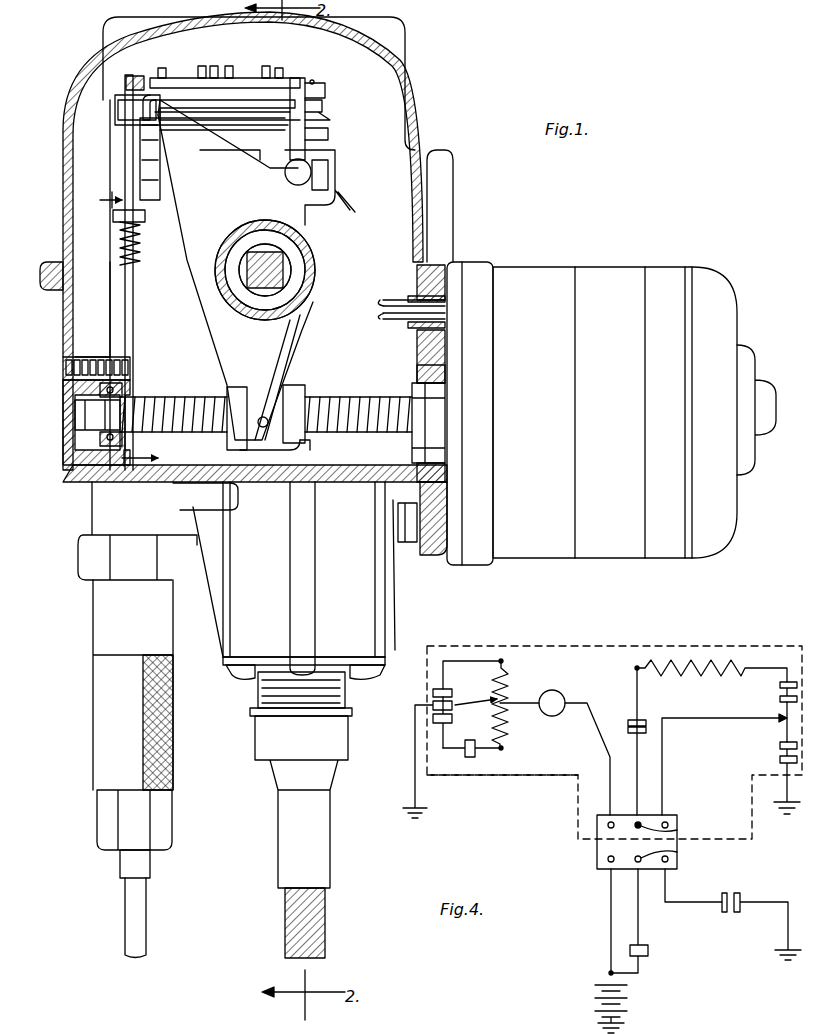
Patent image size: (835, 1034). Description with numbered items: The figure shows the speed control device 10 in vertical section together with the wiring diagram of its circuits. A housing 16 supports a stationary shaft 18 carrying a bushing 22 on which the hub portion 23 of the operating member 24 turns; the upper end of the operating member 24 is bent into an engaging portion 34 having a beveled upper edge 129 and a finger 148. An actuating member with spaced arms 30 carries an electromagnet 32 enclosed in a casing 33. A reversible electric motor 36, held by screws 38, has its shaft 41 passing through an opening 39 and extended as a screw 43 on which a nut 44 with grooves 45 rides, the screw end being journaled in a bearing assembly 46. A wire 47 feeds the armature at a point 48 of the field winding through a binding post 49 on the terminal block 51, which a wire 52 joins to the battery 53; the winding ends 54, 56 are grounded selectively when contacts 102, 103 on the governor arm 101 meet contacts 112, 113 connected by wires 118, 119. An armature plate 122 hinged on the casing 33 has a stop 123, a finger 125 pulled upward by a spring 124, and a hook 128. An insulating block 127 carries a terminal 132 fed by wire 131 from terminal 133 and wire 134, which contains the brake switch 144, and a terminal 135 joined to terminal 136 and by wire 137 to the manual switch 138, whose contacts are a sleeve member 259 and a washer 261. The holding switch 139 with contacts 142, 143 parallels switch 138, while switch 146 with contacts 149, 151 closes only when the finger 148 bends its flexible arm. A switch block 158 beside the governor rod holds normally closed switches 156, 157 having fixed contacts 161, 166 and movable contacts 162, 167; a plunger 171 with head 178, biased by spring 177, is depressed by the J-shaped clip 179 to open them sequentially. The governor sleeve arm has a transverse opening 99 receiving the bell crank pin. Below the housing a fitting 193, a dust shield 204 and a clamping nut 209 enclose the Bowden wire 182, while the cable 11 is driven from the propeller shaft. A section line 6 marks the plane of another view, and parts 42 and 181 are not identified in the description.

In FIG. 1, the speed control device 10 is at (470, 103).
In FIG. 1, the cable 11 is at (333, 925).
In FIG. 1, the housing 16 is at (63, 160).
In FIG. 1, the stationary shaft 18 is at (310, 262).
In FIG. 1, the bushing 22 is at (300, 290).
In FIG. 1, the hub portion 23 is at (260, 240).
In FIG. 1, the operating member 24 is at (175, 258).
In FIG. 1, the arms 30 is at (285, 358).
In FIG. 1, the electromagnet 32 is at (240, 160).
In FIG. 4, the electromagnet 32 is at (710, 672).
In FIG. 1, the casing 33 is at (258, 150).
In FIG. 1, the engaging portion 34 is at (215, 160).
In FIG. 1, the reversible electric motor 36 is at (625, 268).
In FIG. 4, the reversible electric motor 36 is at (552, 690).
In FIG. 1, the screws 38 is at (410, 545).
In FIG. 1, the opening 39 is at (433, 373).
In FIG. 1, the motor shaft 41 is at (440, 410).
In FIG. 1, the seal 42 is at (447, 300).
In FIG. 1, the screw 43 is at (352, 397).
In FIG. 1, the nut 44 is at (225, 395).
In FIG. 1, the grooves 45 is at (290, 445).
In FIG. 1, the bearing assembly 46 is at (70, 470).
In FIG. 1, the wire 47 is at (380, 306).
In FIG. 4, the wire 47 is at (603, 740).
In FIG. 4, the point 48 is at (500, 699).
In FIG. 4, the binding post 49 is at (597, 825).
In FIG. 4, the terminal block 51 is at (597, 852).
In FIG. 4, the wire 52 is at (611, 916).
In FIG. 4, the vehicle battery 53 is at (595, 998).
In FIG. 4, the side of field winding 54 is at (503, 660).
In FIG. 4, the side of field winding 56 is at (502, 748).
In FIG. 1, the transverse opening 99 is at (125, 144).
In FIG. 1, the arm 101 is at (225, 78).
In FIG. 1, the contact 102 is at (210, 58).
In FIG. 4, the contact 102 is at (450, 750).
In FIG. 1, the contact 103 is at (232, 55).
In FIG. 4, the contact 103 is at (430, 708).
In FIG. 1, the contact 112 is at (165, 62).
In FIG. 4, the contact 112 is at (459, 682).
In FIG. 1, the contact 113 is at (266, 66).
In FIG. 4, the contact 113 is at (455, 731).
In FIG. 1, the wire 118 is at (390, 295).
In FIG. 4, the wire 118 is at (462, 660).
In FIG. 1, the wire 119 is at (385, 325).
In FIG. 4, the wire 119 is at (497, 750).
In FIG. 1, the armature plate 122 is at (280, 97).
In FIG. 1, the stop 123 is at (325, 90).
In FIG. 1, the spring 124 is at (330, 110).
In FIG. 1, the finger 125 is at (314, 82).
In FIG. 1, the insulating block 127 is at (330, 134).
In FIG. 1, the hook 128 is at (162, 160).
In FIG. 1, the beveled upper edge 129 is at (225, 118).
In FIG. 4, the wire 131 is at (637, 681).
In FIG. 4, the terminal 132 is at (636, 668).
In FIG. 4, the terminal 133 is at (677, 830).
In FIG. 4, the wire 134 is at (650, 940).
In FIG. 4, the terminal 135 is at (785, 720).
In FIG. 4, the terminal 136 is at (666, 822).
In FIG. 4, the wire 137 is at (683, 908).
In FIG. 4, the switch 138 is at (734, 918).
In FIG. 4, the holding switch 139 is at (760, 756).
In FIG. 4, the contact 142 is at (780, 760).
In FIG. 4, the contact 143 is at (780, 746).
In FIG. 4, the normally closed switch 144 is at (658, 955).
In FIG. 1, the switch 146 is at (320, 210).
In FIG. 4, the switch 146 is at (760, 697).
In FIG. 1, the finger 148 is at (283, 174).
In FIG. 4, the contact 149 is at (780, 698).
In FIG. 4, the contact 151 is at (780, 682).
In FIG. 4, the switch 156 is at (627, 720).
In FIG. 4, the switch 157 is at (470, 770).
In FIG. 1, the switch block 158 is at (118, 312).
In FIG. 4, the fixed contact 161 is at (647, 720).
In FIG. 4, the movable contact 162 is at (647, 731).
In FIG. 4, the fixed contact 166 is at (478, 760).
In FIG. 4, the movable contact 167 is at (463, 753).
In FIG. 1, the plunger 171 is at (118, 242).
In FIG. 1, the spring 177 is at (75, 275).
In FIG. 1, the head 178 is at (113, 216).
In FIG. 1, the J-shaped clip 179 is at (117, 105).
In FIG. 1, the screw 181 is at (128, 84).
In FIG. 1, the Bowden wire 182 is at (162, 912).
In FIG. 1, the fitting 193 is at (78, 565).
In FIG. 1, the dust shield 204 is at (93, 722).
In FIG. 1, the clamping nut 209 is at (97, 825).
In FIG. 4, the sleeve member 259 is at (724, 892).
In FIG. 4, the washer 261 is at (740, 898).
In FIG. 1, the section line 6 is at (131, 331).